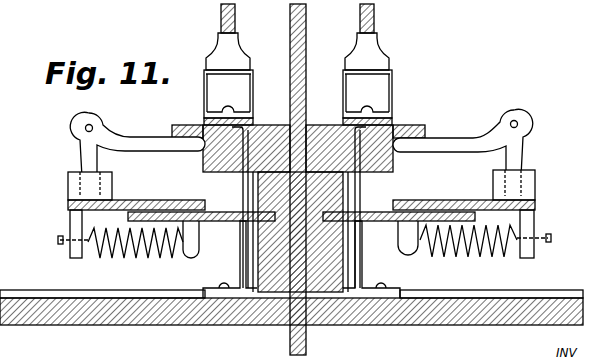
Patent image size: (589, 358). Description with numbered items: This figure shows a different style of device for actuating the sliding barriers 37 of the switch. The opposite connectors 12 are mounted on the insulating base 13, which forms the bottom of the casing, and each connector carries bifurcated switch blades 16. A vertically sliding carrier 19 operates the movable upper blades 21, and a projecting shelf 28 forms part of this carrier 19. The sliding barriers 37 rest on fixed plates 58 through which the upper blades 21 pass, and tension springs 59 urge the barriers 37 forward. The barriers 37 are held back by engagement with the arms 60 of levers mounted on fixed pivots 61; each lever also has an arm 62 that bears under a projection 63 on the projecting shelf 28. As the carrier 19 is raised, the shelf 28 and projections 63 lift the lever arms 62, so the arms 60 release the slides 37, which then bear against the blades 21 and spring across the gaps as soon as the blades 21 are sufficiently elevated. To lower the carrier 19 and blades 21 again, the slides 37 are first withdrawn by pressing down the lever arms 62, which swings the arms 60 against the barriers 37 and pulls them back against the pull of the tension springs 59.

The connector 12 is at (522, 262).
The insulating base 13 is at (432, 316).
The switch blade 16 is at (365, 271).
The carrier 19 is at (306, 331).
The switch blade 21 is at (358, 181).
The shelf 28 is at (393, 162).
The sliding barrier 37 is at (423, 207).
The fixed plate 58 is at (394, 221).
The tension spring 59 is at (452, 250).
The lever arm 60 is at (510, 162).
The fixed pivot 61 is at (518, 121).
The lever arm 62 is at (463, 145).
The projection 63 is at (410, 124).